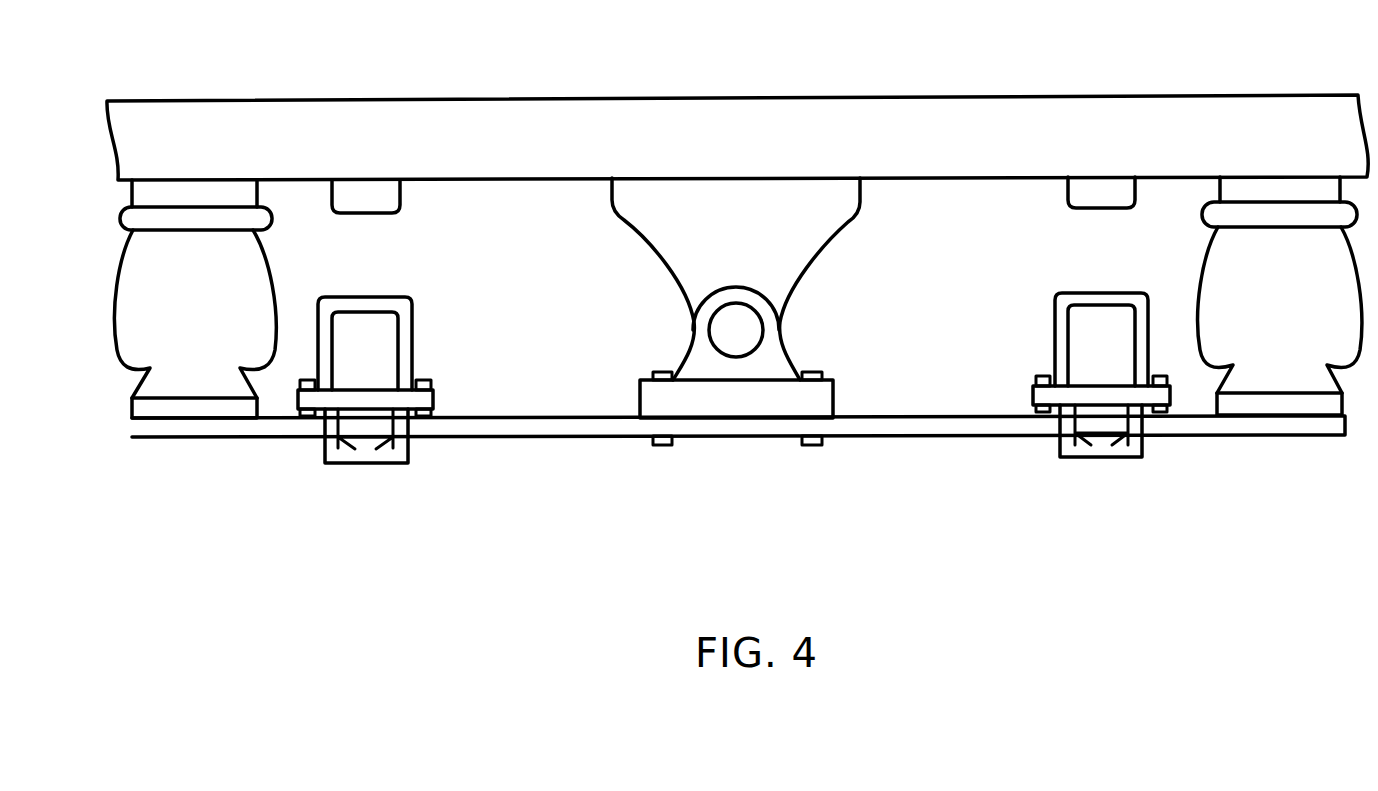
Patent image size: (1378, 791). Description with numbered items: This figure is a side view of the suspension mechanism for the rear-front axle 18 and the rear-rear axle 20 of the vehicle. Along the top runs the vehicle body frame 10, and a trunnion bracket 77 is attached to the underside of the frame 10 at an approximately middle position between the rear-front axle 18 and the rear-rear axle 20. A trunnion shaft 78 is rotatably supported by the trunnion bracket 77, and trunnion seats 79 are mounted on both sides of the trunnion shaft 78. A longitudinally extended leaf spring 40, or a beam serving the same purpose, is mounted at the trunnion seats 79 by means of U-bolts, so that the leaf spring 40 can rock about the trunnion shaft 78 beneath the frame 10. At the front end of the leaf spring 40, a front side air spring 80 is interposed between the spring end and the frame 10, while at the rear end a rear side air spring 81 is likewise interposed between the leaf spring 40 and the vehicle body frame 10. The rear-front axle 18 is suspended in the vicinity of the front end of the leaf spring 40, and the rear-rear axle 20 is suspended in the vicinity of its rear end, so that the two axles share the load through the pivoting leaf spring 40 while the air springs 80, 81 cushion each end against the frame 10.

The vehicle body frame 10 is at (593, 107).
The rear-front axle 18 is at (407, 315).
The rear-rear axle 20 is at (1060, 300).
The leaf spring 40 is at (938, 428).
The trunnion bracket 77 is at (653, 238).
The trunnion shaft 78 is at (760, 345).
The trunnion seat 79 is at (738, 402).
The front side air spring 80 is at (273, 313).
The rear side air spring 81 is at (1250, 287).